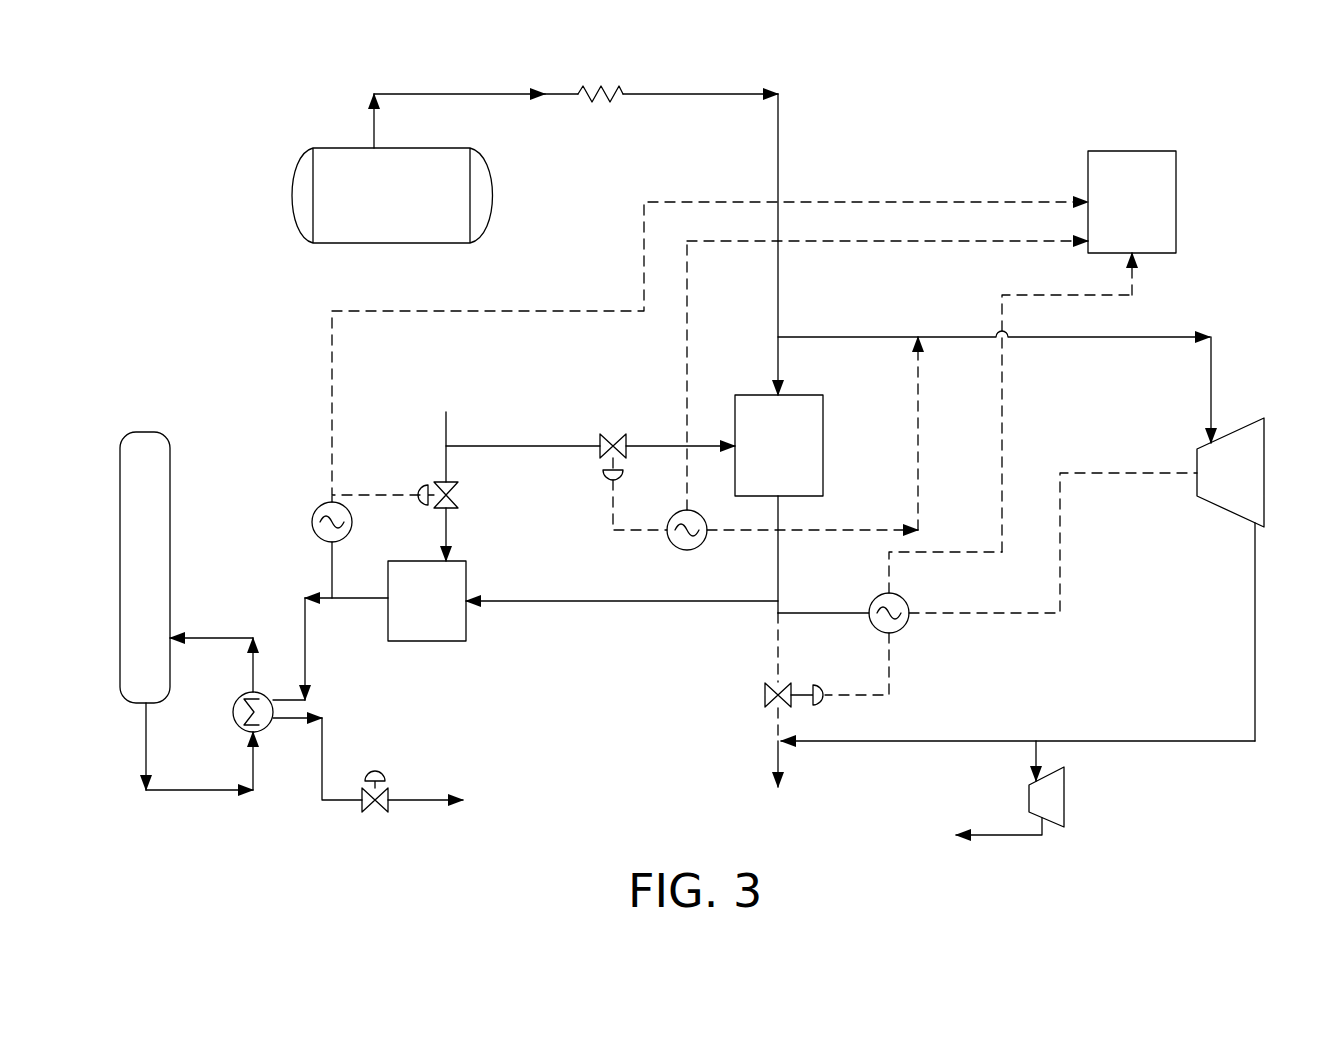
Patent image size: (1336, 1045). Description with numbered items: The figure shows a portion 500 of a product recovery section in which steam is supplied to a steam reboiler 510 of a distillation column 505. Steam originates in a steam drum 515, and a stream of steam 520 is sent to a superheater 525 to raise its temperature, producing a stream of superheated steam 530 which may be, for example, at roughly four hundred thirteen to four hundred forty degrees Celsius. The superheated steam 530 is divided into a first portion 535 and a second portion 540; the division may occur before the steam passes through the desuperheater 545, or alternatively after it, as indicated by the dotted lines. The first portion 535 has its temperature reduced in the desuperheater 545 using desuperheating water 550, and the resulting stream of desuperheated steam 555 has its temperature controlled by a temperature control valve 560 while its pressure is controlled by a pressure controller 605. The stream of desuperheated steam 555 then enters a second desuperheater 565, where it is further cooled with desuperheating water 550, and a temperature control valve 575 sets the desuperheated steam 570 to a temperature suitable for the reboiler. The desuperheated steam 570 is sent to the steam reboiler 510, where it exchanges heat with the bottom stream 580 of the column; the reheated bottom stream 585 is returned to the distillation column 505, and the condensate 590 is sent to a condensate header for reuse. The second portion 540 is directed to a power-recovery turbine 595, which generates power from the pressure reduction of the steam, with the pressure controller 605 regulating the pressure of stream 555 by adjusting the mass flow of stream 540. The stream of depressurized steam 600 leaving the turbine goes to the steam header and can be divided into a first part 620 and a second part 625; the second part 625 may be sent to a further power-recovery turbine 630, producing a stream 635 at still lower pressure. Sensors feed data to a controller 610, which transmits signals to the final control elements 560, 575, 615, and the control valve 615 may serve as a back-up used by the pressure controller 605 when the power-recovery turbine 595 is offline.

The portion of a product recovery section 500 is at (205, 98).
The distillation column 505 is at (121, 441).
The steam reboiler 510 is at (233, 714).
The steam drum 515 is at (322, 149).
The stream of steam 520 is at (457, 92).
The superheater 525 is at (600, 90).
The stream of superheated steam 530 is at (732, 92).
The first portion 535 is at (777, 351).
The second portion 540 is at (847, 335).
The desuperheater 545 is at (825, 447).
The desuperheating water 550 is at (446, 412).
The stream of desuperheated steam 555 is at (618, 614).
The temperature control valve 560 is at (614, 432).
The desuperheater 565 is at (466, 563).
The desuperheated steam 570 is at (304, 598).
The temperature control valve 575 is at (421, 486).
The bottom stream 580 is at (146, 738).
The reheated bottom stream 585 is at (213, 637).
The condensate 590 is at (323, 751).
The power-recovery turbine 595 is at (1252, 421).
The stream of depressurized steam 600 is at (1257, 645).
The pressure controller 605 is at (903, 627).
The controller 610 is at (1160, 151).
The control valve 615 is at (765, 697).
The first part 620 is at (1001, 740).
The second part 625 is at (1033, 770).
The power-recovery turbine 630 is at (1067, 797).
The stream 635 is at (1020, 838).